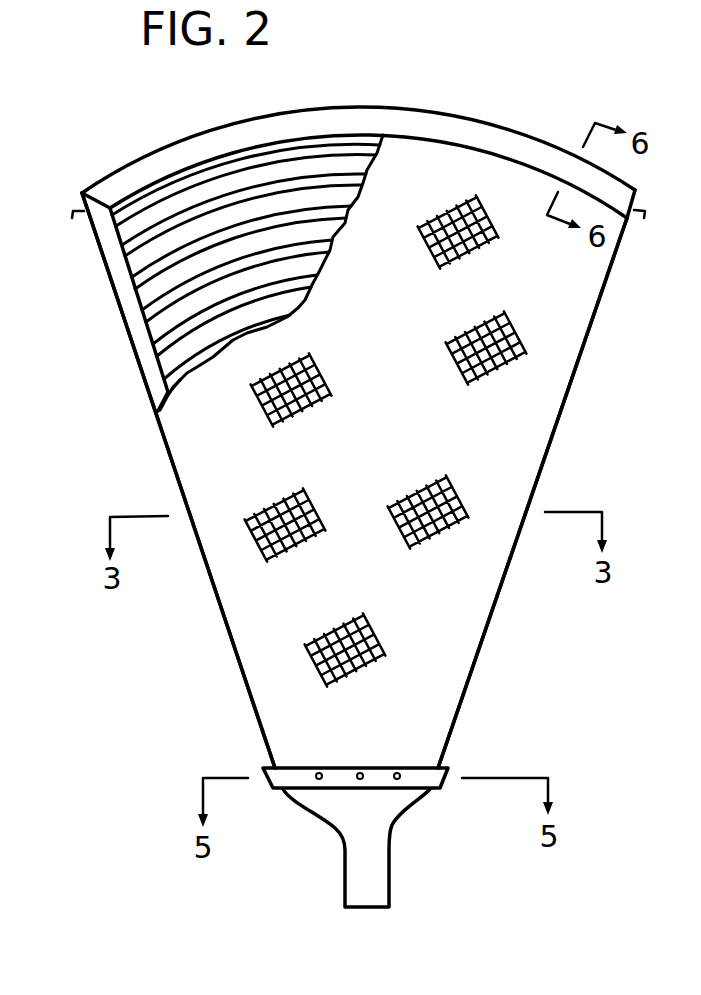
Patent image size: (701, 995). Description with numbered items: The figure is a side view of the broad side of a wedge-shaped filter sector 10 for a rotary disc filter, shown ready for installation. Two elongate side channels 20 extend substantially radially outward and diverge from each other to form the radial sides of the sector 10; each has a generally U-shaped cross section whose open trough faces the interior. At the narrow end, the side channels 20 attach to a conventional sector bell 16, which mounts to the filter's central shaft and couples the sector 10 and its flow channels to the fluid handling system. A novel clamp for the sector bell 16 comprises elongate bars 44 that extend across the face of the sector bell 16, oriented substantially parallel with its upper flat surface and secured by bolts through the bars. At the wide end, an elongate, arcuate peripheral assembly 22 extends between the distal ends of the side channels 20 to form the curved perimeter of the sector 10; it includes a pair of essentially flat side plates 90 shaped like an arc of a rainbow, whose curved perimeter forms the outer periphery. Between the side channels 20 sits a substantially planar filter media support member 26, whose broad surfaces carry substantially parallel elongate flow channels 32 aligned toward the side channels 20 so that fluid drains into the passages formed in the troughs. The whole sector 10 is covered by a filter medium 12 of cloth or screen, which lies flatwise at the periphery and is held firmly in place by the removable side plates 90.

The filter sector 10 is at (549, 129).
The filter medium 12 is at (475, 426).
The sector bell 16 is at (378, 798).
The side channels 20 is at (113, 258).
The peripheral assembly 22 is at (343, 98).
The filter media support member 26 is at (200, 230).
The flow channels 32 is at (180, 294).
The elongate bars 44 is at (378, 778).
The flat side plates 90 is at (443, 123).